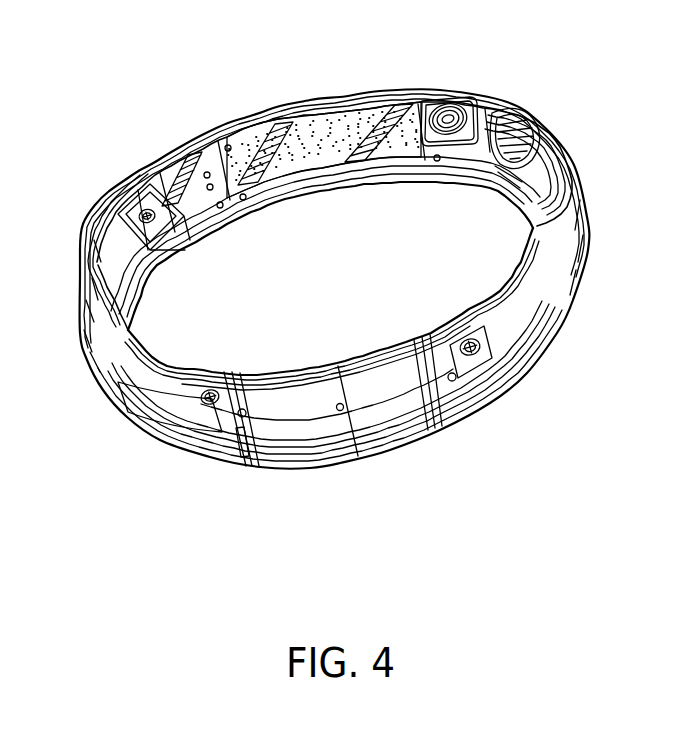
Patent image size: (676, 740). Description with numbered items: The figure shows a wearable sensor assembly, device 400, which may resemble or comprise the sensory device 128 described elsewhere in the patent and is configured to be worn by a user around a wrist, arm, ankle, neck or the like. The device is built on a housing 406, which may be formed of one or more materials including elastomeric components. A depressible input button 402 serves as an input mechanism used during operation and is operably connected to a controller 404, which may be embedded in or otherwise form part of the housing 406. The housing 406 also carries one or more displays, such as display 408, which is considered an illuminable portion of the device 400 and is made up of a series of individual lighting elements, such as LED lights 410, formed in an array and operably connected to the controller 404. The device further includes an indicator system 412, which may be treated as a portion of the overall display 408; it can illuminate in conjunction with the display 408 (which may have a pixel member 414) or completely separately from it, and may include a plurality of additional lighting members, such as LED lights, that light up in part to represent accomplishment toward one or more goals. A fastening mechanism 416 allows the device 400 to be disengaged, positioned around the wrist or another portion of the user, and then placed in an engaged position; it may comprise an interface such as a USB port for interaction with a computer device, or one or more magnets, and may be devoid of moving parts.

The sensory device 128 is at (566, 109).
The device 400 is at (359, 273).
The depressible input button 402 is at (453, 86).
The controller 404 is at (87, 268).
The housing 406 is at (582, 177).
The display 408 is at (260, 137).
The LED lights 410 is at (312, 120).
The indicator system 412 is at (360, 186).
The pixel member 414 is at (317, 178).
The fastening mechanism 416 is at (368, 463).